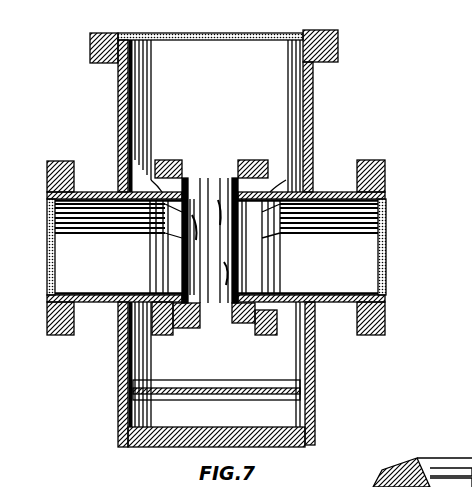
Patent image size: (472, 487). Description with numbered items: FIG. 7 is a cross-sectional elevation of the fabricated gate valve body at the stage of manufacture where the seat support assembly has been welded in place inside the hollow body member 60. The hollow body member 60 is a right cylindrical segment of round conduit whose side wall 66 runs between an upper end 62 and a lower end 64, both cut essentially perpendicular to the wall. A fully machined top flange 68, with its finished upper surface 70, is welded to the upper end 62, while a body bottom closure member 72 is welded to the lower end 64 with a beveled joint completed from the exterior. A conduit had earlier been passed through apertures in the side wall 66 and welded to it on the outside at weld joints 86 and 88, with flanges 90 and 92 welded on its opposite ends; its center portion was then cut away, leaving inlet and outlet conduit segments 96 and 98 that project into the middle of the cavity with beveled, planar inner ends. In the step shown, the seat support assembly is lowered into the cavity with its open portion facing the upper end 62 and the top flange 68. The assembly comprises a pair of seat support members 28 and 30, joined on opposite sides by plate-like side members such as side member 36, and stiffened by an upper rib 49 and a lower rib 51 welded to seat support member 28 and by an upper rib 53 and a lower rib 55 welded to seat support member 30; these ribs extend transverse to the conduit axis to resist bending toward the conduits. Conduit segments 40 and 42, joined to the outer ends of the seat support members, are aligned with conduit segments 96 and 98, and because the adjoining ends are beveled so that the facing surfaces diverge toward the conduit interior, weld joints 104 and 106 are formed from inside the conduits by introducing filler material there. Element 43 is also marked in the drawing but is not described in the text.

The seat support member 28 is at (198, 180).
The seat support member 30 is at (260, 178).
The side member 36 is at (206, 322).
The conduit segment 40 is at (158, 157).
The conduit segment 42 is at (304, 143).
The fragment member 43 is at (378, 480).
The upper rib 49 is at (166, 160).
The lower rib 51 is at (126, 334).
The upper rib 53 is at (264, 160).
The lower rib 55 is at (266, 335).
The hollow body member 60 is at (224, 82).
The upper end 62 is at (178, 33).
The lower end 64 is at (160, 382).
The side wall 66 is at (313, 85).
The top flange 68 is at (338, 42).
The upper surface 70 is at (108, 33).
The body bottom closure member 72 is at (315, 404).
The weld joint 86 is at (105, 192).
The weld joint 88 is at (318, 310).
The flange 90 is at (62, 161).
The flange 92 is at (380, 160).
The conduit segment 96 is at (70, 247).
The conduit segment 98 is at (370, 220).
The weld joint 104 is at (152, 264).
The weld joint 106 is at (280, 247).